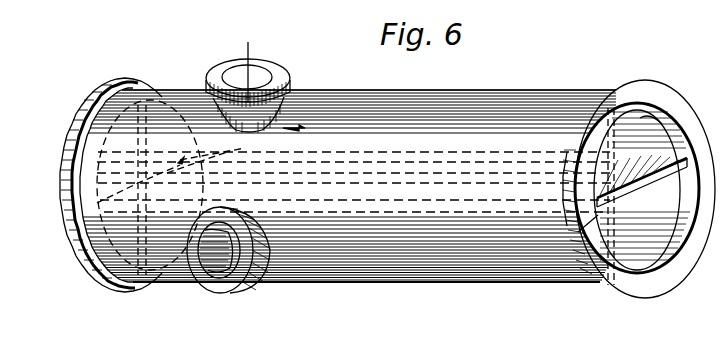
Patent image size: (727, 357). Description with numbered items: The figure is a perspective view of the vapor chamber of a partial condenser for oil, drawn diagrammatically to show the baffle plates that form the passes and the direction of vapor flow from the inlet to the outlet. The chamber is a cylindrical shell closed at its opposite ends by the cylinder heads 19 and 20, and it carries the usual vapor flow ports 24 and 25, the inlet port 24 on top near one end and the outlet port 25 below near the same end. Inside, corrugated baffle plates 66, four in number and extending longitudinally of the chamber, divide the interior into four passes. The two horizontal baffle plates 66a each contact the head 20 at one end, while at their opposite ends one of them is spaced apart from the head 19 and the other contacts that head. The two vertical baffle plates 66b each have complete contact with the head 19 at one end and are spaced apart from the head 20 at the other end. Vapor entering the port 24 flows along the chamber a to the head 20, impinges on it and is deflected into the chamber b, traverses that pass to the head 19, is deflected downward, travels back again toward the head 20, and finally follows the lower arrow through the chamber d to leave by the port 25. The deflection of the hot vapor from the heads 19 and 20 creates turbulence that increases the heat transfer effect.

The cylinder head 19 is at (90, 158).
The cylinder head 20 is at (697, 107).
The vapor flow port 24 is at (258, 70).
The vapor flow port 25 is at (212, 268).
The corrugated baffle plates 66 is at (697, 160).
The horizontal baffle plates 66a is at (82, 112).
The vertical baffle plates 66b is at (128, 80).
The chamber a is at (598, 215).
The chamber b is at (660, 123).
The chamber d is at (598, 278).